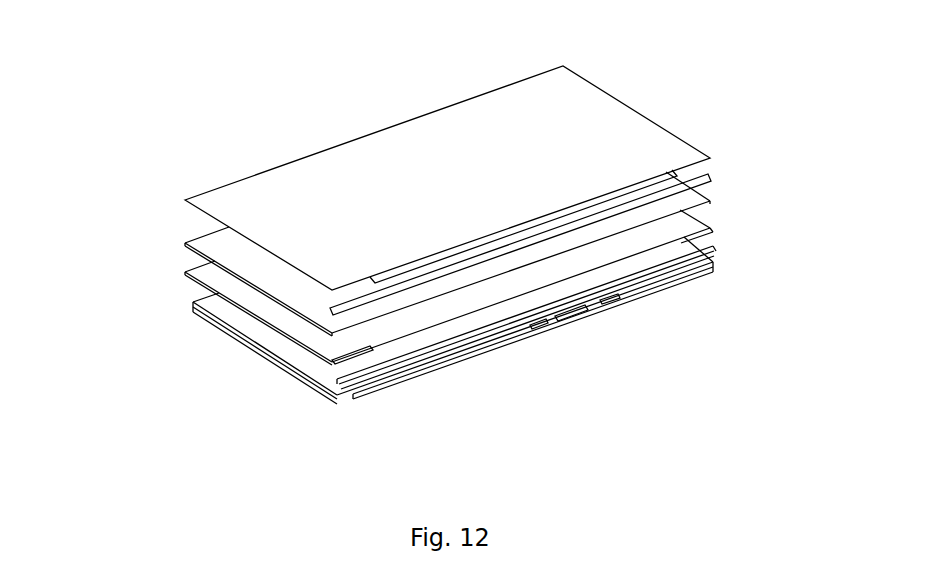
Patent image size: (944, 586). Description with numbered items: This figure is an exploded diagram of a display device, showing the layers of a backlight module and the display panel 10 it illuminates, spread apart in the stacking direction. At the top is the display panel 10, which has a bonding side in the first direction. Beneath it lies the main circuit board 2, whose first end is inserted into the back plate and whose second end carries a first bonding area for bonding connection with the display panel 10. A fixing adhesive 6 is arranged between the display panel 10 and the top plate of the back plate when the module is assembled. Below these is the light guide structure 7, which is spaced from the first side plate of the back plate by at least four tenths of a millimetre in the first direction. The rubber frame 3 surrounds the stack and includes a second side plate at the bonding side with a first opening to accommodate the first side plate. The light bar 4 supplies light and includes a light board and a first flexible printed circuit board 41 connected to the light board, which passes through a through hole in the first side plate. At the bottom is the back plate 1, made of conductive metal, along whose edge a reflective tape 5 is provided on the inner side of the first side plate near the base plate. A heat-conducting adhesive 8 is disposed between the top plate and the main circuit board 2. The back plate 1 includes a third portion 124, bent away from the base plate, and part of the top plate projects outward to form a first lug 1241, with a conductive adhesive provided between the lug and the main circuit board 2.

The display panel 10 is at (623, 133).
The light guide structure 7 is at (220, 236).
The main circuit board 2 is at (650, 181).
The fixing adhesive 6 is at (712, 177).
The rubber frame 3 is at (187, 272).
The light bar 4 is at (247, 324).
The back plate 1 is at (260, 357).
The reflective tape 5 is at (716, 248).
The heat-conducting adhesive 8 is at (697, 281).
The first flexible printed circuit board 41 is at (548, 332).
The third portion 124 is at (367, 396).
The first lug 1241 is at (412, 384).